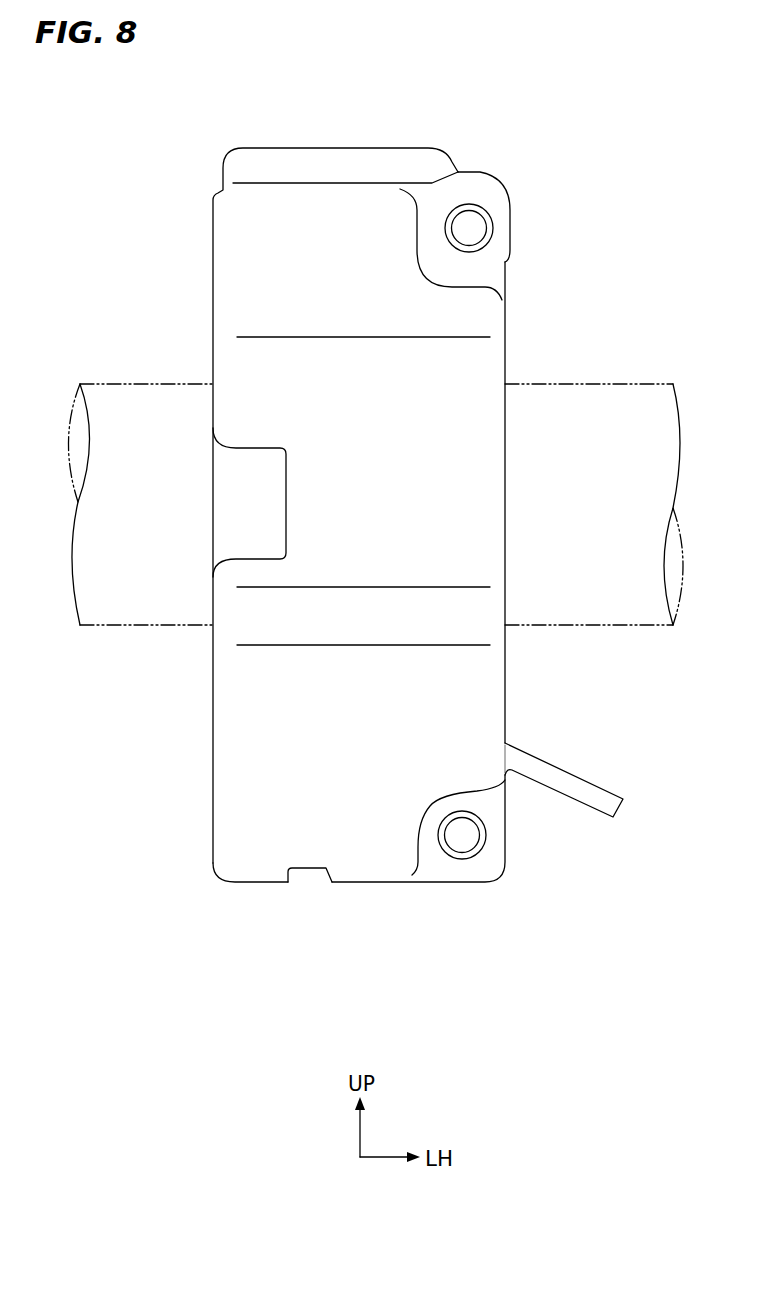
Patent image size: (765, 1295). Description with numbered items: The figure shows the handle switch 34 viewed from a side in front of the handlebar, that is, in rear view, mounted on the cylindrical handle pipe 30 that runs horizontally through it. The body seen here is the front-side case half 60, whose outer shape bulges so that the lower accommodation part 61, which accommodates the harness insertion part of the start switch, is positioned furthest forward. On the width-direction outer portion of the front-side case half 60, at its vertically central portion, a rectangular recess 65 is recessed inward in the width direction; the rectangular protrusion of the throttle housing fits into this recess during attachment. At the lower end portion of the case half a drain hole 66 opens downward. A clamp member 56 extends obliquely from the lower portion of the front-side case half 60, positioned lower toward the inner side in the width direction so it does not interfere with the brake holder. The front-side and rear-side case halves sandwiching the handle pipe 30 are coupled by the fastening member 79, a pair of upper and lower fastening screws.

The handle pipe 30 is at (641, 383).
The handle switch 34 is at (547, 121).
The clamp member 56 is at (603, 800).
The front-side case half 60 is at (512, 283).
The lower accommodation part 61 is at (233, 803).
The rectangular recess 65 is at (252, 450).
The drain hole 66 is at (297, 878).
The fastening member 79 is at (470, 228).